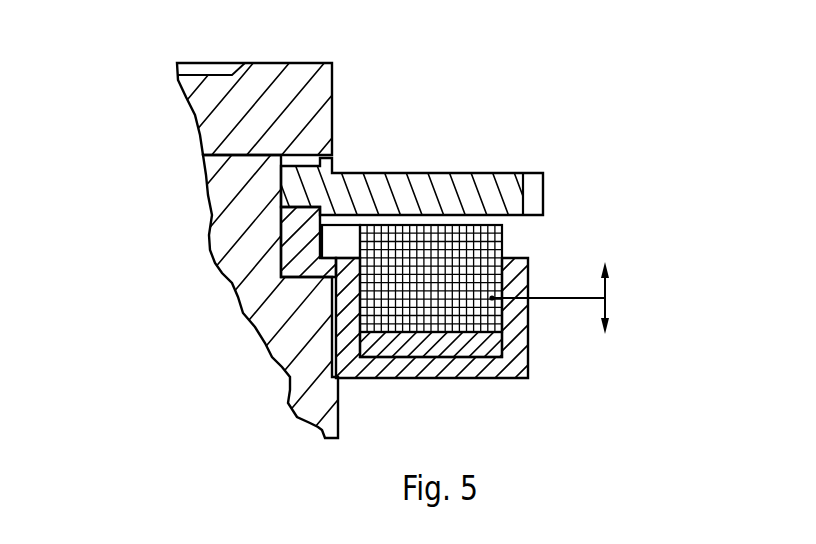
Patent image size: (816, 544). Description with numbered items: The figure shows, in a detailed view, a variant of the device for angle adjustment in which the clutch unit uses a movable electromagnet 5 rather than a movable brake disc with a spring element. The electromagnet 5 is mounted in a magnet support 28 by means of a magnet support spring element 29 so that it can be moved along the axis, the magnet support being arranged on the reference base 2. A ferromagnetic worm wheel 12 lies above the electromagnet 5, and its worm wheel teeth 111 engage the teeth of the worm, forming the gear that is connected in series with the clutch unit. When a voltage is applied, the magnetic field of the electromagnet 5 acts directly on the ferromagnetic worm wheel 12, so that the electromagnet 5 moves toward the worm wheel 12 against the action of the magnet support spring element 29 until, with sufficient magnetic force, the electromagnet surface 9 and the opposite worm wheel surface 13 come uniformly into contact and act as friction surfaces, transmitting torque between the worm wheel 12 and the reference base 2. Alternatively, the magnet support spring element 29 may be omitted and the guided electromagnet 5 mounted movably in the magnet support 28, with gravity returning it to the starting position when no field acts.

The reference base 2 is at (245, 205).
The ferromagnetic worm wheel 12 is at (355, 197).
The worm wheel teeth 111 is at (533, 180).
The electromagnet surface 9 is at (461, 218).
The worm wheel surface 13 is at (495, 222).
The electromagnet 5 is at (467, 312).
The magnet support spring element 29 is at (450, 348).
The magnet support 28 is at (420, 368).